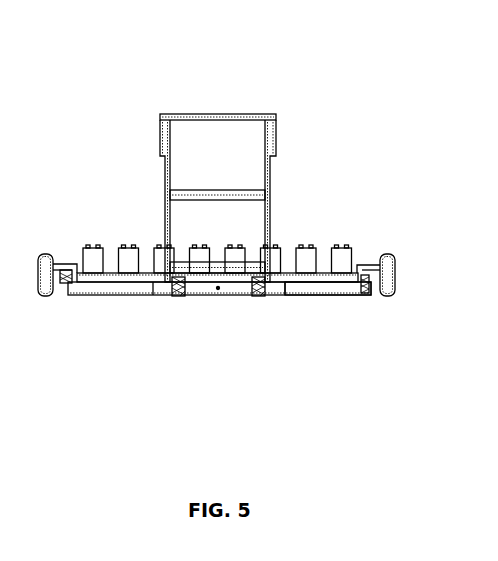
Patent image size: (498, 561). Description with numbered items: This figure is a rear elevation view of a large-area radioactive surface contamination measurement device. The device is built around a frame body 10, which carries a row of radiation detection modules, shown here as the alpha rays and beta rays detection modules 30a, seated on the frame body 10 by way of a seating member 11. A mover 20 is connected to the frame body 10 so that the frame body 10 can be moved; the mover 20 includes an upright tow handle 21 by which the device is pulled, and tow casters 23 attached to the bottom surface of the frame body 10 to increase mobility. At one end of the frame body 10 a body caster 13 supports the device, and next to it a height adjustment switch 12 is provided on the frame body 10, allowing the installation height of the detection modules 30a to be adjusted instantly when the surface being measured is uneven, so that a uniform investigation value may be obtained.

The frame body 10 is at (115, 305).
The seating member 11 is at (305, 296).
The height adjustment switch 12 is at (62, 294).
The body caster 13 is at (48, 253).
The mover 20 is at (147, 142).
The tow handle 21 is at (277, 133).
The tow caster 23 is at (253, 296).
The alpha rays and beta rays detection module 30a is at (127, 240).